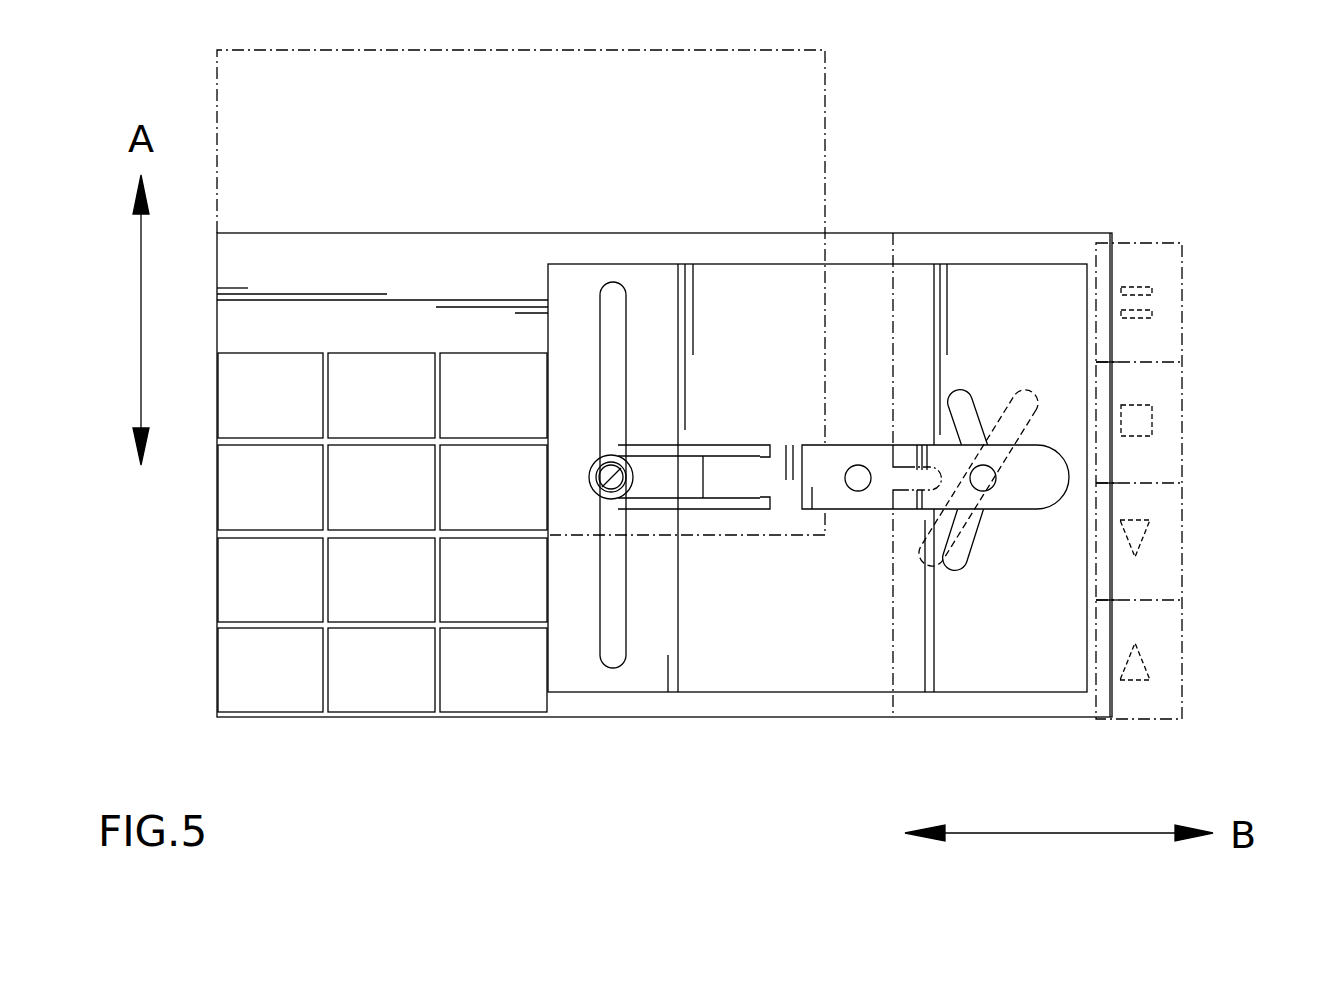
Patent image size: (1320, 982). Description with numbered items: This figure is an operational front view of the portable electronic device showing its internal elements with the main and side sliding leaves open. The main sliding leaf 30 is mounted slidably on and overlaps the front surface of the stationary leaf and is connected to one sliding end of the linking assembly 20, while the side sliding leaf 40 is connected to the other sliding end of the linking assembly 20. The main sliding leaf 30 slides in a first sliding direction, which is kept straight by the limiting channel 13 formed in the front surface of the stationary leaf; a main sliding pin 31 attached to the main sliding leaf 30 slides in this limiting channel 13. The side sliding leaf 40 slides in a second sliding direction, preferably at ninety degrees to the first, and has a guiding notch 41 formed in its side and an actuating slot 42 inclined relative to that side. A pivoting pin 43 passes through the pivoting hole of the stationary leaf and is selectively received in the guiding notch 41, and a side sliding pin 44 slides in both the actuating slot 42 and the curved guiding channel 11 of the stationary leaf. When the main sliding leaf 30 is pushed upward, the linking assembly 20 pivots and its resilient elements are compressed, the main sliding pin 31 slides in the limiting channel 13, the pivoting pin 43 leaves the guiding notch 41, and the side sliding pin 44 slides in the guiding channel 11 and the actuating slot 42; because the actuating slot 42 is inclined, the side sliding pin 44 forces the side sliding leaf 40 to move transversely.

The main sliding leaf 30 is at (536, 60).
The linking assembly 20 is at (842, 430).
The limiting channel 13 is at (610, 372).
The guiding channel 11 is at (967, 415).
The pivoting pin 43 is at (858, 484).
The actuating slot 42 is at (1212, 330).
The guiding notch 41 is at (918, 442).
The side sliding pin 44 is at (985, 485).
The main sliding pin 31 is at (606, 482).
The side sliding leaf 40 is at (1183, 522).